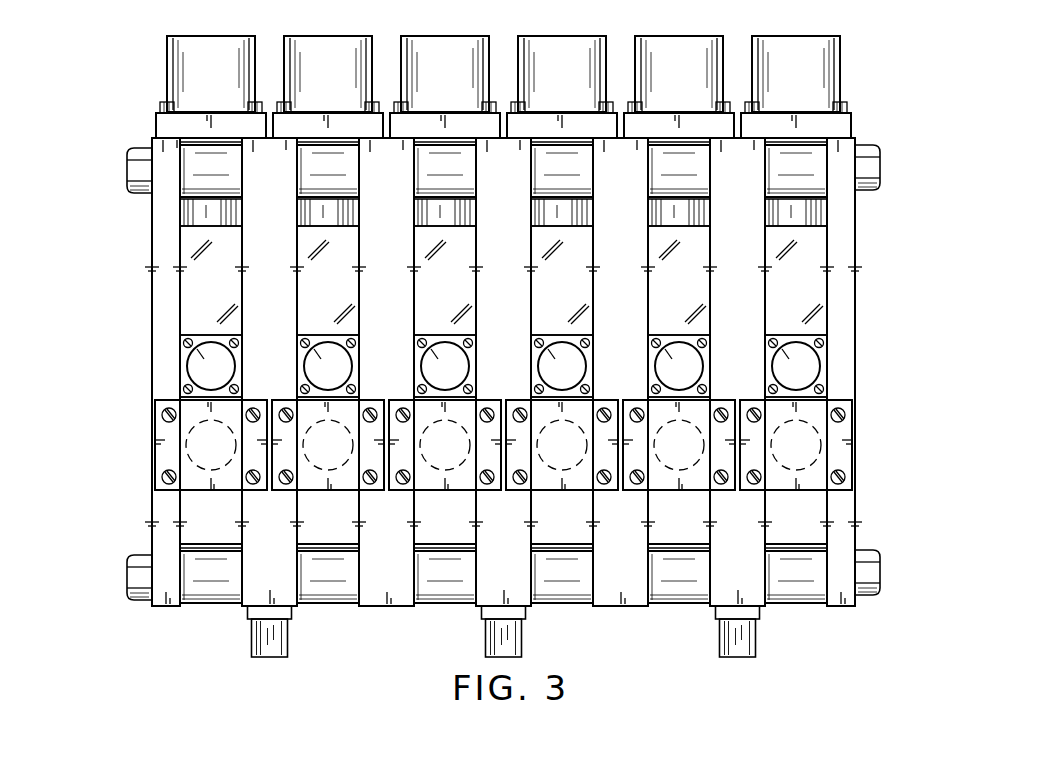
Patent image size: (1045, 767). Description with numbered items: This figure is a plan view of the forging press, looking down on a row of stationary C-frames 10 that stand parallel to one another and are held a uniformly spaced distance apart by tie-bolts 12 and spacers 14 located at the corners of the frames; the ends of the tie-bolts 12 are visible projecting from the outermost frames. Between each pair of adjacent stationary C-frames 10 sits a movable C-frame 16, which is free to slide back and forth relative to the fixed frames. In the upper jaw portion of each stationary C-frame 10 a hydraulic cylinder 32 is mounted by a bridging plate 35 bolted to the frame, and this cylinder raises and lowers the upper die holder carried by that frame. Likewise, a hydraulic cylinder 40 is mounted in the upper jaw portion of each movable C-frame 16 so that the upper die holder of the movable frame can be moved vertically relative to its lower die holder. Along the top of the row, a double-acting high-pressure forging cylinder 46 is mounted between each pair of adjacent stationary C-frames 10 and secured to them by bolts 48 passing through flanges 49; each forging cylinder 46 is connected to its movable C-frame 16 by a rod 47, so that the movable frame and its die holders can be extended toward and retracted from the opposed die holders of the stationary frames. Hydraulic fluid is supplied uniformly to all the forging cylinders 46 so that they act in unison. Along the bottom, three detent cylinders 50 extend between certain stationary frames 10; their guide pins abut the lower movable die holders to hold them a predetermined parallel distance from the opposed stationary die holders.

The stationary C-frame 10 is at (816, 630).
The tie-bolt 12 is at (881, 167).
The spacer 14 is at (818, 172).
The movable C-frame 16 is at (805, 247).
The hydraulic cylinder 32 is at (825, 443).
The bridging plate 35 is at (843, 425).
The hydraulic cylinder 40 is at (810, 353).
The double-acting high-pressure forging cylinder 46 is at (847, 43).
The rod 47 is at (813, 208).
The bolt 48 is at (848, 104).
The flange 49 is at (848, 120).
The detent cylinder 50 is at (289, 640).